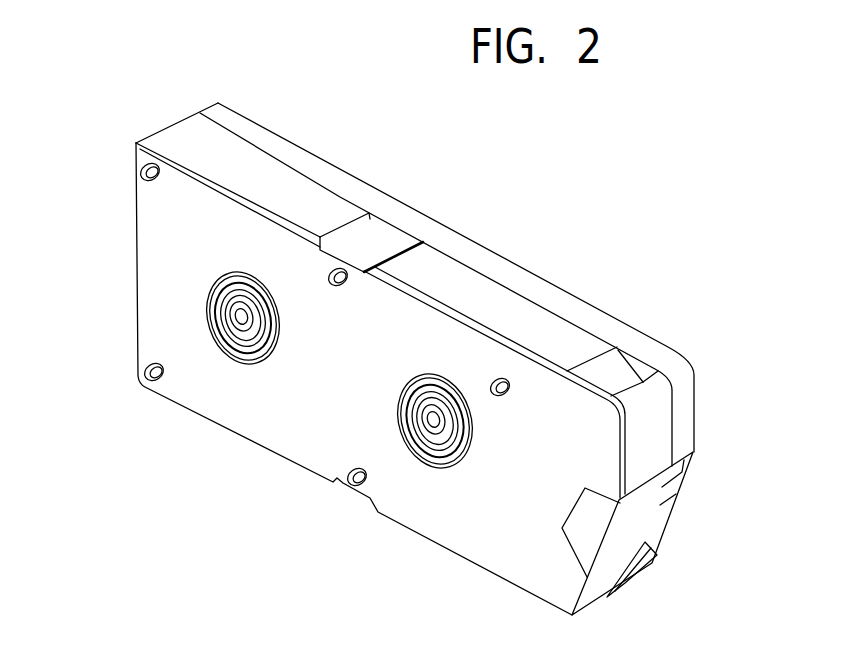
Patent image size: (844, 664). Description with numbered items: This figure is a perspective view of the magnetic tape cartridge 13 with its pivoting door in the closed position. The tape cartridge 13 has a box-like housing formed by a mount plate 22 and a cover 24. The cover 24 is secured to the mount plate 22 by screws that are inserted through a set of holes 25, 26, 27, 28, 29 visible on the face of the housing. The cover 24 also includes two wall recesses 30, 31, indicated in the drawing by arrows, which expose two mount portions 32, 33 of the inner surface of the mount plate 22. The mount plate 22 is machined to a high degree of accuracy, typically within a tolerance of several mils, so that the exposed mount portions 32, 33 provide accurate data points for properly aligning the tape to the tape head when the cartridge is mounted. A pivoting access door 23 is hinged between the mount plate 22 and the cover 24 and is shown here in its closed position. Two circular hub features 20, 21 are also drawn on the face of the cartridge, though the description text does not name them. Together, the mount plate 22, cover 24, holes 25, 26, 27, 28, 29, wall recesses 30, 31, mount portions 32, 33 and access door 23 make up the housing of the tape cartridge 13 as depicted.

The tape cartridge 13 is at (664, 88).
The supply reel hub 20 is at (206, 288).
The take-up reel hub 21 is at (438, 468).
The mount plate 22 is at (278, 148).
The pivoting access door 23 is at (660, 505).
The cover 24 is at (250, 408).
The hole 25 is at (335, 483).
The hole 26 is at (140, 363).
The hole 27 is at (134, 157).
The hole 28 is at (340, 268).
The hole 29 is at (502, 378).
The wall recess 30 is at (612, 368).
The wall recess 31 is at (625, 575).
The mount portion 32 is at (640, 378).
The mount portion 33 is at (652, 563).